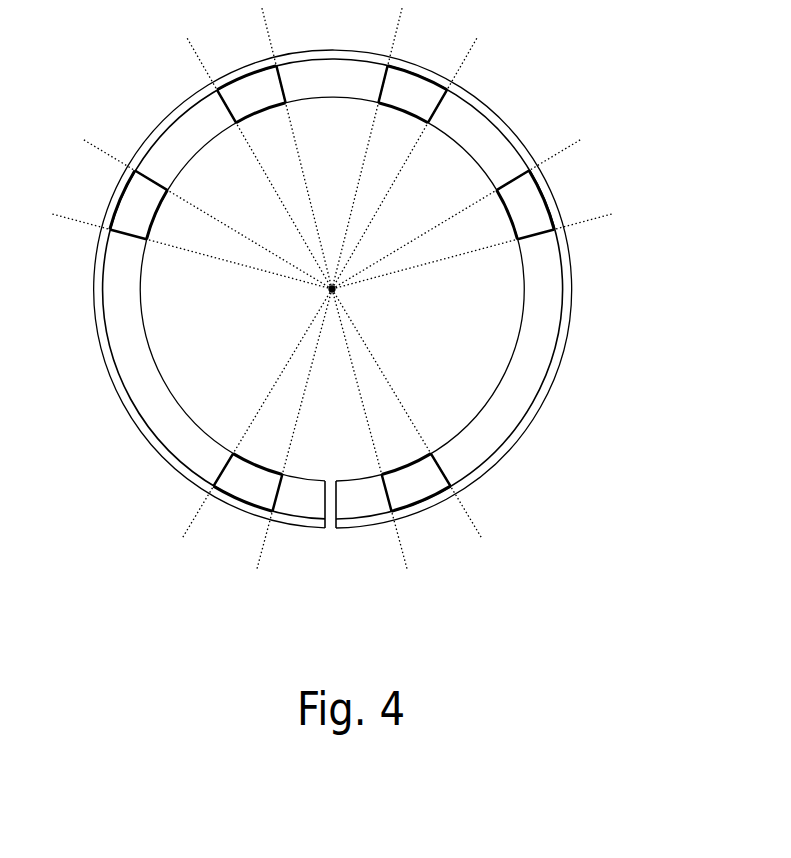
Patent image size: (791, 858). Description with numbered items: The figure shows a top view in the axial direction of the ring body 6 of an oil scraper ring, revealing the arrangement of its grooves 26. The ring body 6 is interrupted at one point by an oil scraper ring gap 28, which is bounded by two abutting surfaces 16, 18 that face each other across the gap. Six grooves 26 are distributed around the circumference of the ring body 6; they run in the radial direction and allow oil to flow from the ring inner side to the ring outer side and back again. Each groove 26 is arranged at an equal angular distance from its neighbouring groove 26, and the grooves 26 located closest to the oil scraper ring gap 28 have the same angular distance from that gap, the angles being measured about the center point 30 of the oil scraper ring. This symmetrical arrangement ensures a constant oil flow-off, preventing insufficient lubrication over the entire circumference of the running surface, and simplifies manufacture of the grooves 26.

The ring body 6 is at (152, 126).
The grooves 26 is at (540, 203).
The center point of the oil scraper ring 30 is at (332, 289).
The abutting surface 16 is at (317, 508).
The abutting surface 18 is at (348, 502).
The oil scraper ring gap 28 is at (339, 539).